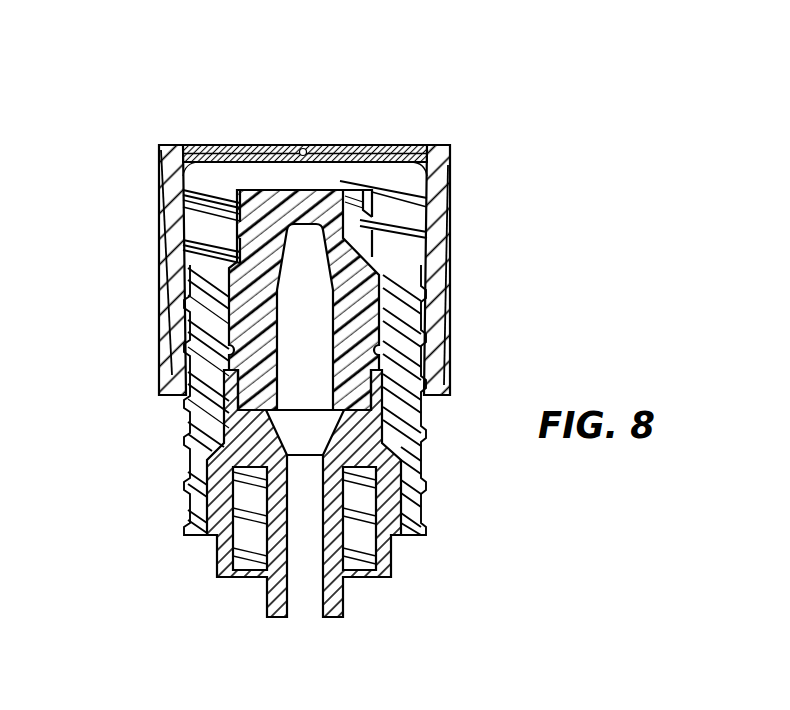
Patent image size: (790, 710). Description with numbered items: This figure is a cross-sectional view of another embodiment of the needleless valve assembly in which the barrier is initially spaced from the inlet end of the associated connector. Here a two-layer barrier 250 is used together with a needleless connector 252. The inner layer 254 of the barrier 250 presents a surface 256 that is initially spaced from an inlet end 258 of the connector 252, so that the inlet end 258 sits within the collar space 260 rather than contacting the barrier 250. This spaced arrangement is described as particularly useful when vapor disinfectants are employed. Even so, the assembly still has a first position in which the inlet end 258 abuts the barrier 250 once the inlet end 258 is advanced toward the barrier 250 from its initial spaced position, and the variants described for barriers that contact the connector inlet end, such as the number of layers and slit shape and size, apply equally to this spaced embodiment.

The two-layer barrier 250 is at (230, 112).
The needleless connector 252 is at (196, 464).
The inner layer 254 is at (379, 147).
The surface 256 is at (434, 188).
The inlet end 258 is at (365, 222).
The collar space 260 is at (203, 182).